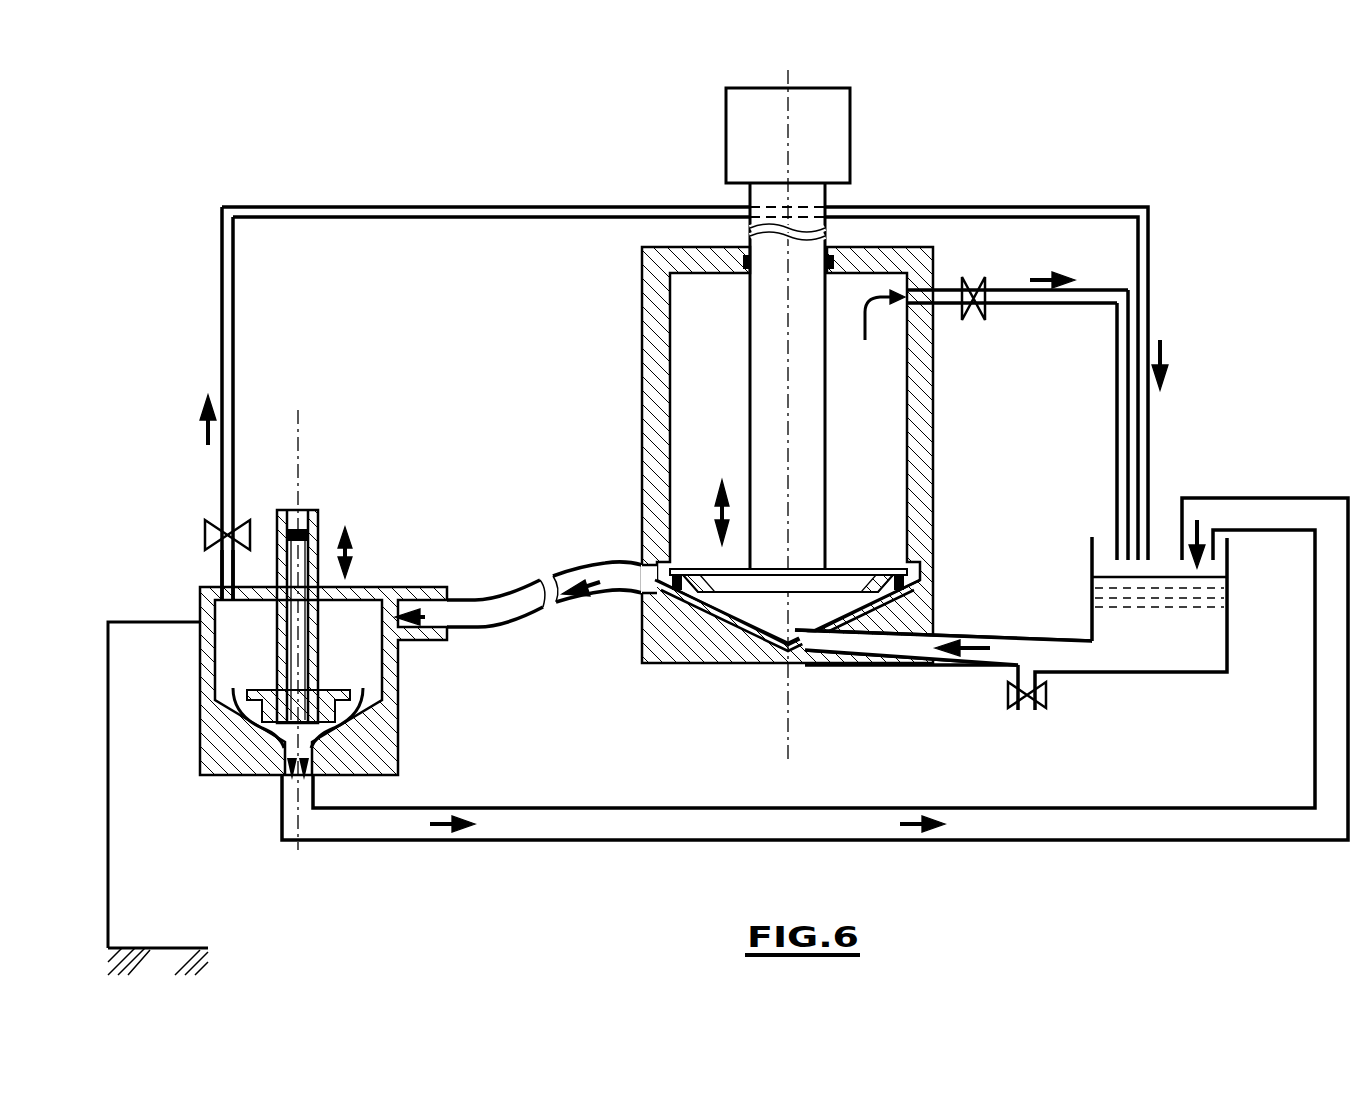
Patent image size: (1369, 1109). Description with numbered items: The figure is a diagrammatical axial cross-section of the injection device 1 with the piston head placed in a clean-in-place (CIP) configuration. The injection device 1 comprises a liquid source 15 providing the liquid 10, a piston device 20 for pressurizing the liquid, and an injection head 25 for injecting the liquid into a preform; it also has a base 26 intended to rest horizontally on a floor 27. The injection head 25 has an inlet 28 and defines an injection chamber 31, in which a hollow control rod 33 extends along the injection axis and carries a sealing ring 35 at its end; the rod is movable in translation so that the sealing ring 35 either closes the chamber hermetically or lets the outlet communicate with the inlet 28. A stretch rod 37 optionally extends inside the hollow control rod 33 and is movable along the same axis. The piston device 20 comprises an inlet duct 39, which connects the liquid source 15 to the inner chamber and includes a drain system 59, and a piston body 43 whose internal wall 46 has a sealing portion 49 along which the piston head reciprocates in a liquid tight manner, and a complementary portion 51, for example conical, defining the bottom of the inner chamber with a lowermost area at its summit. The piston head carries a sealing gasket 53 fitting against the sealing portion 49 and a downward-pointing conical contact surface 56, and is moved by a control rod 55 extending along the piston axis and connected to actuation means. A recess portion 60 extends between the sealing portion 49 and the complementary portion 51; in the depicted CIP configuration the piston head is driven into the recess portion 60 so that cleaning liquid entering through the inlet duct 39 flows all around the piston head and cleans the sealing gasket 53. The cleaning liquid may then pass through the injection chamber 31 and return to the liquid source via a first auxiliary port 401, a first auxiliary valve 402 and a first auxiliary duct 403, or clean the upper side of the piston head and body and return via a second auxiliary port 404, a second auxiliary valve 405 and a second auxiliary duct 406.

The injection device 1 is at (1143, 192).
The liquid 10 is at (1222, 647).
The liquid source 15 is at (1165, 502).
The piston device 20 is at (811, 407).
The injection head 25 is at (245, 616).
The base 26 is at (125, 946).
The floor 27 is at (158, 966).
The inlet 28 is at (432, 598).
The injection chamber 31 is at (228, 663).
The hollow control rod 33 is at (280, 520).
The sealing ring 35 is at (255, 740).
The stretch rod 37 is at (312, 540).
The inlet duct 39 is at (950, 637).
The piston body 43 is at (932, 462).
The internal wall 46 is at (676, 458).
The sealing portion 49 is at (910, 500).
The complementary portion 51 is at (685, 592).
The sealing gasket 53 is at (672, 590).
The control rod 55 is at (807, 407).
The contact surface 56 is at (725, 625).
The drain system 59 is at (1035, 708).
The recess portion 60 is at (930, 573).
The first auxiliary port 401 is at (222, 574).
The first auxiliary valve 402 is at (207, 532).
The first auxiliary duct 403 is at (222, 315).
The second auxiliary port 404 is at (930, 290).
The second auxiliary valve 405 is at (985, 290).
The second auxiliary duct 406 is at (1030, 303).